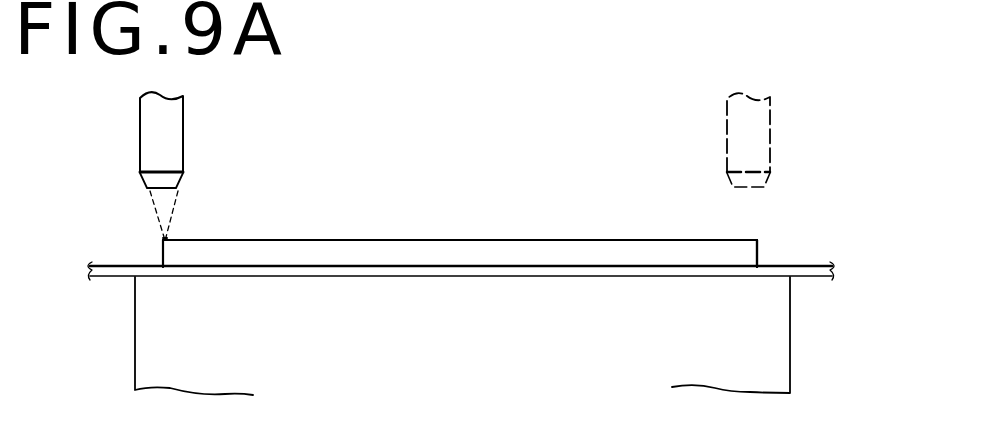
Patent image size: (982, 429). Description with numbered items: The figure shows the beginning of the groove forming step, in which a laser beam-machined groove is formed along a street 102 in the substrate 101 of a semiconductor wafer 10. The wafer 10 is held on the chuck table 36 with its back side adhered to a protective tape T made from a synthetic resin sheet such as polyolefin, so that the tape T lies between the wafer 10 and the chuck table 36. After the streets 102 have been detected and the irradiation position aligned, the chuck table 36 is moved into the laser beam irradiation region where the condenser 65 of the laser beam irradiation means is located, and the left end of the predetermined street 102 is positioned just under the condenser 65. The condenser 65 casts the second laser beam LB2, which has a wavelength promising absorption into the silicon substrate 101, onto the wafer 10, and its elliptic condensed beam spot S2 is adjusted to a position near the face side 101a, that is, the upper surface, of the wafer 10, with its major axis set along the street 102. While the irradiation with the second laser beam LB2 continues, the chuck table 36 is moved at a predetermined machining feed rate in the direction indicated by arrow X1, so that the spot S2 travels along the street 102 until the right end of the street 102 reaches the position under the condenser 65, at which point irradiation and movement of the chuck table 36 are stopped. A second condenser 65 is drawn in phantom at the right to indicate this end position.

The condenser 65 is at (178, 128).
The second laser beam LB2 is at (174, 214).
The condensed beam spot S2 is at (164, 237).
The substrate 101 is at (392, 250).
The face side 101a is at (500, 240).
The semiconductor wafer 10 is at (655, 241).
The street 102 is at (763, 245).
The protective tape T is at (110, 276).
The chuck table 36 is at (780, 348).
The arrow X1 is at (570, 418).